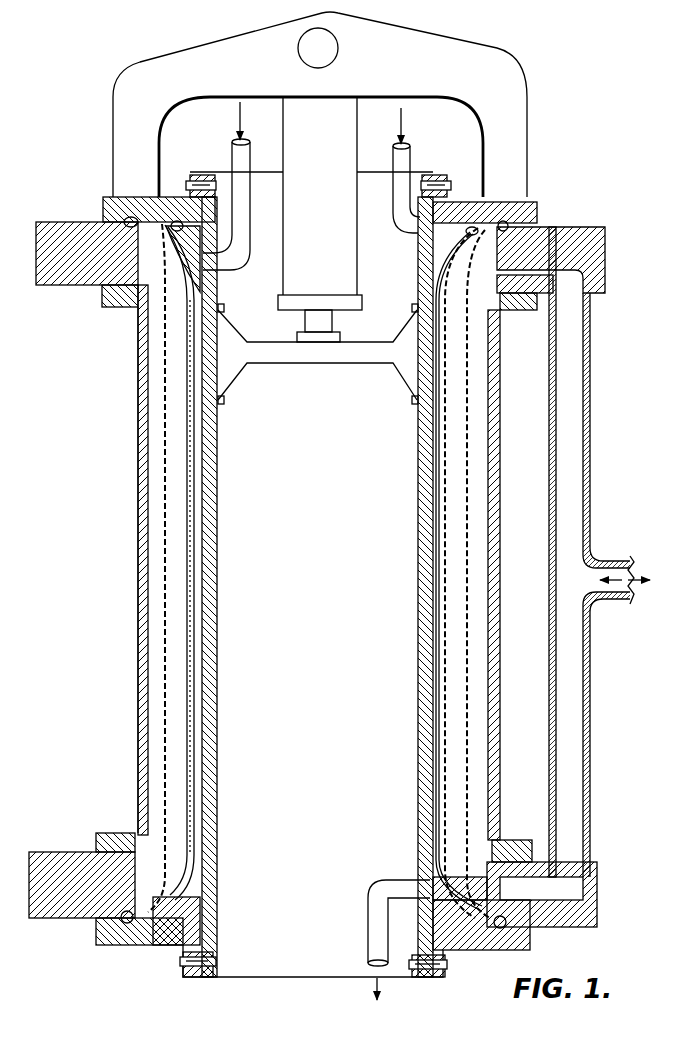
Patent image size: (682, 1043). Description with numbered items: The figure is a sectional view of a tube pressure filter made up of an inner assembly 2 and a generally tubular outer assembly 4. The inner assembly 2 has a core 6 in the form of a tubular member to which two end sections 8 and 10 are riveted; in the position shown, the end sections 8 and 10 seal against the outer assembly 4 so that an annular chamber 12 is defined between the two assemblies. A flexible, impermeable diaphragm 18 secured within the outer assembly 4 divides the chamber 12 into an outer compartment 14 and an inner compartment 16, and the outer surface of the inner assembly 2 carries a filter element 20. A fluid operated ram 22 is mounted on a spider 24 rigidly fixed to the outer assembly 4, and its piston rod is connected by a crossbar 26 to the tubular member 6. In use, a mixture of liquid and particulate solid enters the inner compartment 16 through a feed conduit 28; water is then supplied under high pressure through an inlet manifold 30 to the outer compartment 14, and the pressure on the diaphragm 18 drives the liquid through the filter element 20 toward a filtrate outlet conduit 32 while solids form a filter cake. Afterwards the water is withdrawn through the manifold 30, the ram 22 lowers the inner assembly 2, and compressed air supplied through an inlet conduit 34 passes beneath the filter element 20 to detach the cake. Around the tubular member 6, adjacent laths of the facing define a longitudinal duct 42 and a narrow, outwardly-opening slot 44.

The inner assembly 2 is at (214, 982).
The outer assembly 4 is at (130, 746).
The core 6 is at (218, 609).
The end section 8 is at (173, 197).
The end section 10 is at (453, 950).
The annular chamber 12 is at (152, 551).
The outer compartment 14 is at (150, 488).
The inner compartment 16 is at (178, 502).
The diaphragm 18 is at (165, 432).
The filter element 20 is at (187, 660).
The fluid operated ram 22 is at (340, 107).
The spider 24 is at (440, 47).
The crossbar 26 is at (352, 365).
The feed conduit 28 is at (408, 158).
The inlet manifold 30 is at (592, 446).
The filtrate outlet conduit 32 is at (368, 908).
The inlet conduit 34 is at (250, 152).
The longitudinal duct 42 is at (437, 497).
The slot 44 is at (440, 525).